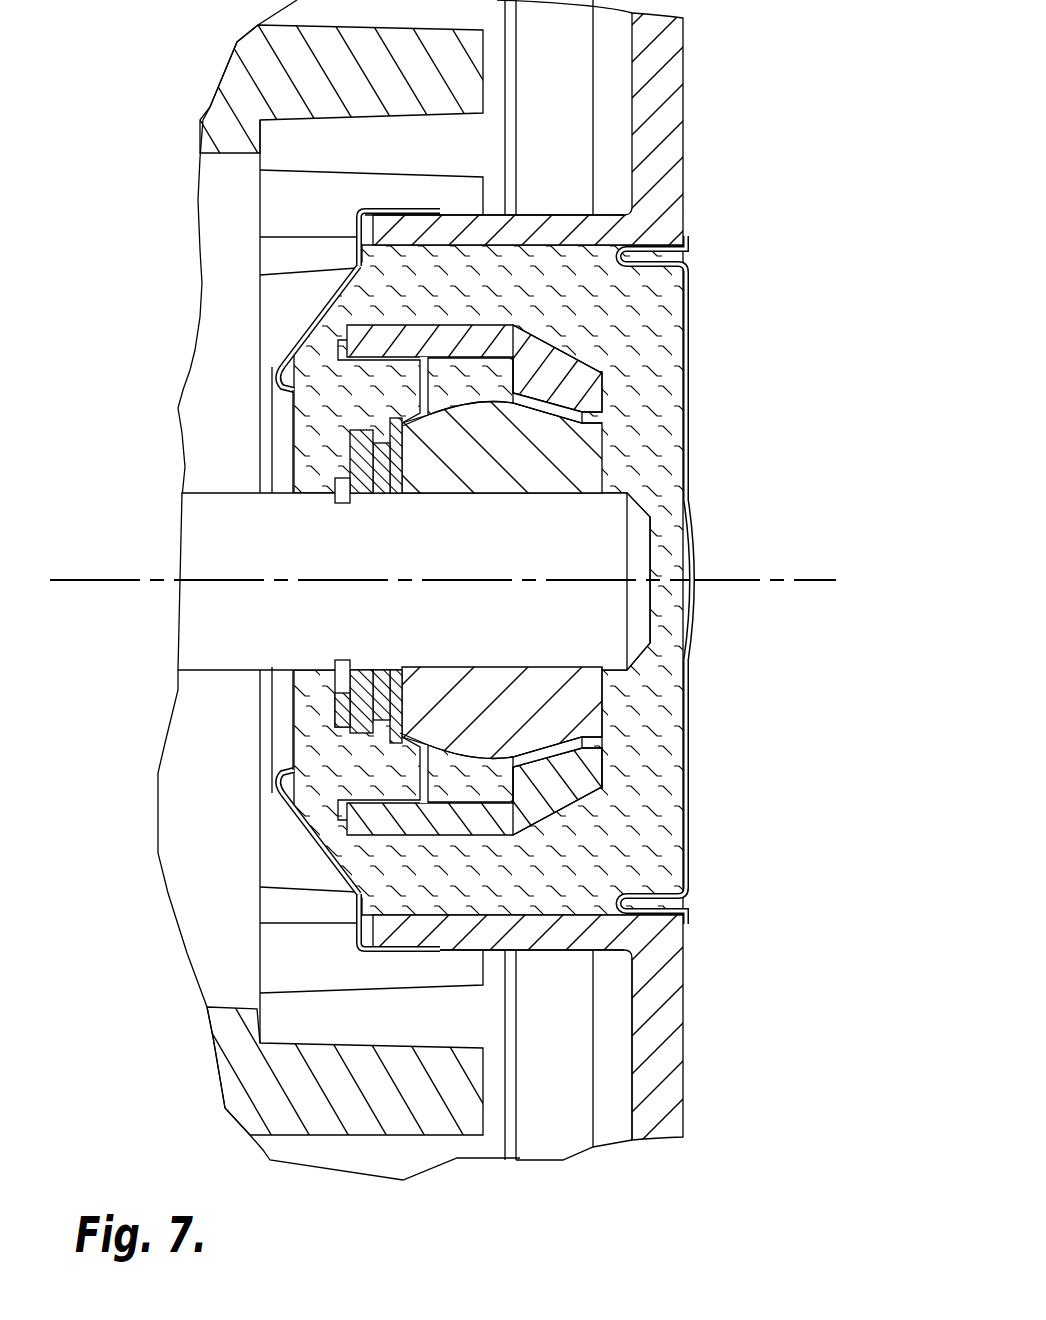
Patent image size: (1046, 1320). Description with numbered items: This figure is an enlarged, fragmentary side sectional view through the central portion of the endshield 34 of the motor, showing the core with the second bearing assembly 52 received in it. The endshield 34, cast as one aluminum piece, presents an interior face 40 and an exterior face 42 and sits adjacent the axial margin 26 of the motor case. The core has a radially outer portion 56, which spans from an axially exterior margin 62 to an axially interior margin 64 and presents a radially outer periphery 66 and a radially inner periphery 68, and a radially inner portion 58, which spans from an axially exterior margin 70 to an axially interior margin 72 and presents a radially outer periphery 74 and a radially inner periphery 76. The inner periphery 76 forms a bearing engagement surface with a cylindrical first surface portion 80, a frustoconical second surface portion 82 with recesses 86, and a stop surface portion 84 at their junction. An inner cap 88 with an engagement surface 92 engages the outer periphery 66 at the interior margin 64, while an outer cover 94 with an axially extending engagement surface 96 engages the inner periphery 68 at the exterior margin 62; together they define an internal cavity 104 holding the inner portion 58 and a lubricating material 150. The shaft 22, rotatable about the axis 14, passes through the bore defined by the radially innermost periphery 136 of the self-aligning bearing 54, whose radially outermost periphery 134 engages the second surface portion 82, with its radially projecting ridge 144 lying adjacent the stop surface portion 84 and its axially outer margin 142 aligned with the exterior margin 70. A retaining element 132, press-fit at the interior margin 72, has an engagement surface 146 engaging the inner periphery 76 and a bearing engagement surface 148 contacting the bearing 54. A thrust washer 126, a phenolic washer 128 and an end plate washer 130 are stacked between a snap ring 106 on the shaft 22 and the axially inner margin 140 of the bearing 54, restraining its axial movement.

The axis 14 is at (103, 580).
The shaft 22 is at (202, 625).
The axial margin 26 is at (680, 1162).
The endshield 34 is at (668, 80).
The interior face 40 is at (632, 1090).
The exterior face 42 is at (685, 1040).
The second bearing assembly 52 is at (340, 740).
The self-aligning bearing 54 is at (532, 475).
The radially outer portion 56 is at (523, 218).
The radially inner portion 58 is at (457, 343).
The axially exterior margin 62 is at (685, 958).
The axially interior margin 64 is at (362, 940).
The radially outer periphery 66 is at (473, 212).
The radially inner periphery 68 is at (567, 247).
The axially exterior margin 70 is at (620, 432).
The axially interior margin 72 is at (335, 330).
The radially outer periphery 74 is at (520, 322).
The radially inner periphery 76 is at (487, 360).
The first surface portion 80 is at (433, 797).
The second surface portion 82 is at (580, 740).
The stop surface portion 84 is at (518, 783).
The recesses 86 is at (565, 400).
The inner cap 88 is at (299, 347).
The engagement surface 92 is at (407, 217).
The outer cover 94 is at (688, 670).
The engagement surface 96 is at (655, 245).
The internal cavity 104 is at (610, 823).
The snap ring 106 is at (343, 708).
The thrust washer 126 is at (393, 470).
The phenolic washer 128 is at (377, 483).
The end plate washer 130 is at (362, 483).
The retaining element 132 is at (410, 355).
The radially outermost periphery 134 is at (553, 743).
The radially innermost periphery 136 is at (543, 675).
The axially inner margin 140 is at (413, 690).
The axially outer margin 142 is at (595, 690).
The radially projecting ridge 144 is at (497, 763).
The engagement surface 146 is at (368, 357).
The bearing engagement surface 148 is at (418, 428).
The lubricating material 150 is at (655, 484).